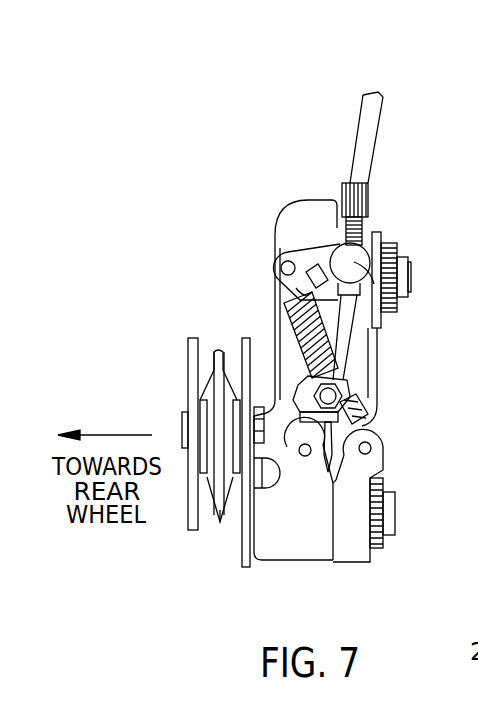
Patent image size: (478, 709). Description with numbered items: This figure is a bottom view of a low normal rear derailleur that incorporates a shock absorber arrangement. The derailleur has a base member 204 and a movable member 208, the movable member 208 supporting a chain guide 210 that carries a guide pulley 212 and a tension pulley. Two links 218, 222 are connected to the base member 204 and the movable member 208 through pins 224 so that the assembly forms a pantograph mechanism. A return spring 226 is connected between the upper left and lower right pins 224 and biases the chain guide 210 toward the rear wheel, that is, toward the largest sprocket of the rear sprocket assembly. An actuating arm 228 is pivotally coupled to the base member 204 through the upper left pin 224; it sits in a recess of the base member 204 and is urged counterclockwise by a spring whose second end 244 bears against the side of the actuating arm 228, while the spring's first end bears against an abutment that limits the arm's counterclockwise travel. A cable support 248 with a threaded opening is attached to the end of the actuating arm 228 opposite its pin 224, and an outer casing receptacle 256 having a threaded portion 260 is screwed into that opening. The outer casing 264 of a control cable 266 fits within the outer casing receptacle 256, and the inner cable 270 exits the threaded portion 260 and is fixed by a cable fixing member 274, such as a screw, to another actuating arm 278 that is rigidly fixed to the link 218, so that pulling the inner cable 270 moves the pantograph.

The base member 204 is at (332, 213).
The movable member 208 is at (350, 550).
The chain guide 210 is at (188, 370).
The guide pulley 212 is at (220, 523).
The link 218 is at (272, 318).
The link 222 is at (377, 373).
The pins 224 is at (280, 262).
The return spring 226 is at (275, 333).
The actuating arm 228 is at (283, 250).
The second end 244 is at (283, 290).
The cable support 248 is at (393, 288).
The outer casing receptacle 256 is at (372, 202).
The threaded portion 260 is at (368, 232).
The outer casing 264 is at (358, 125).
The control cable 266 is at (348, 78).
The inner cable 270 is at (355, 341).
The cable fixing member 274 is at (350, 386).
The actuating arm 278 is at (345, 399).